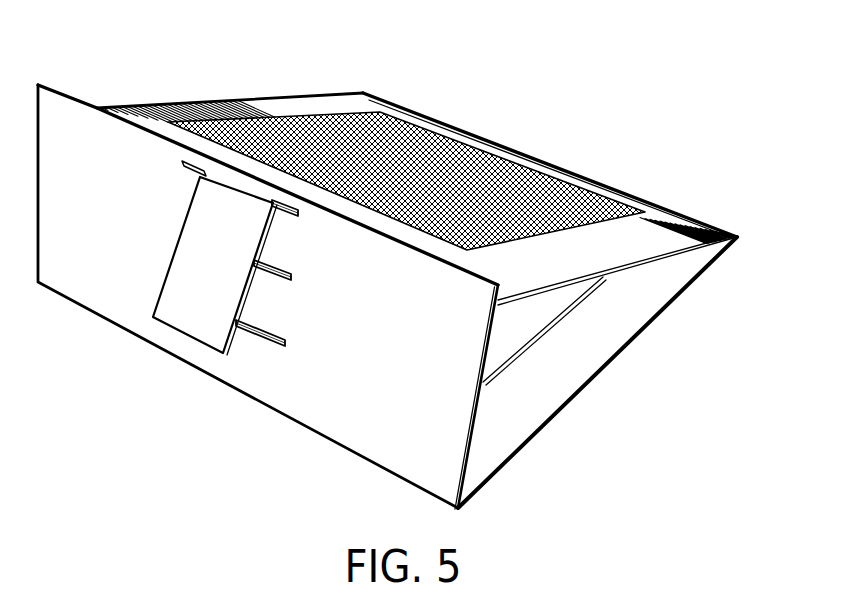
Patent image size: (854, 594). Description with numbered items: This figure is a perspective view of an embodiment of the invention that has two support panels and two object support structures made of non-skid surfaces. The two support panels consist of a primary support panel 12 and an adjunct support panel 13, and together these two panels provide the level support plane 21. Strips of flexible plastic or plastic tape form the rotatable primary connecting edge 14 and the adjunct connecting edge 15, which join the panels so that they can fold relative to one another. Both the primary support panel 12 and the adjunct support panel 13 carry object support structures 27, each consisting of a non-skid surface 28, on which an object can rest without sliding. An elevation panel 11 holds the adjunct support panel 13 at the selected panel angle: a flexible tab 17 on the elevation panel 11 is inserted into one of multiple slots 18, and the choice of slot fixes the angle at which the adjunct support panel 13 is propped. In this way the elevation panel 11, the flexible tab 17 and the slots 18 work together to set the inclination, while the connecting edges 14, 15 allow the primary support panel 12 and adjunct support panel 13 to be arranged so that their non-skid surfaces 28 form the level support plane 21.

The elevation panel 11 is at (434, 450).
The primary support panel 12 is at (670, 326).
The adjunct support panel 13 is at (342, 107).
The rotatable primary connecting edge 14 is at (460, 508).
The adjunct connecting edge 15 is at (740, 237).
The flexible tab 17 is at (220, 291).
The slots 18 is at (308, 227).
The level support plane 21 is at (499, 128).
The object support structures 27 is at (531, 198).
The non-skid surfaces 28 is at (566, 242).